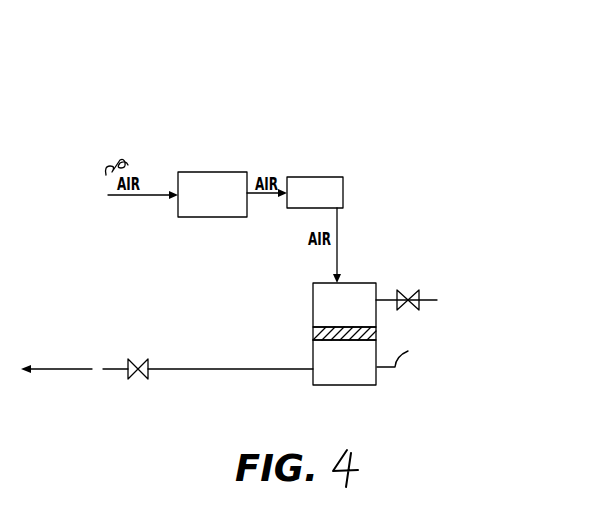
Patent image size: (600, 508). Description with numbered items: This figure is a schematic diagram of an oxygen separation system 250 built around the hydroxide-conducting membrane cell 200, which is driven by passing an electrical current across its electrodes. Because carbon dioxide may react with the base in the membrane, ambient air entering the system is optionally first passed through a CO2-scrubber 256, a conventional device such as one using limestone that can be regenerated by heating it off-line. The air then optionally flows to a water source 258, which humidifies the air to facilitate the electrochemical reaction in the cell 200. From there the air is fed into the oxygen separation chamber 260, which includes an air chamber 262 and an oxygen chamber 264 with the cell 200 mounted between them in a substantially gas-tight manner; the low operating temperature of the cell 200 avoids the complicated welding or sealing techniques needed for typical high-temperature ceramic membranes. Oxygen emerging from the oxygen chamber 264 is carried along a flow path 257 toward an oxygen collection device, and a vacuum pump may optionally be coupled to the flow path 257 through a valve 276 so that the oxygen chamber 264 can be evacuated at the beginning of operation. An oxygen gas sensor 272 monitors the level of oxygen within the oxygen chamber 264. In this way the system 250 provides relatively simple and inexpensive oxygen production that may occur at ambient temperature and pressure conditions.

The system 250 is at (355, 88).
The CO2-scrubber 256 is at (233, 172).
The water source 258 is at (333, 176).
The oxygen separation chamber 260 is at (419, 270).
The air chamber 262 is at (363, 316).
The cell 200 is at (388, 329).
The oxygen chamber 264 is at (363, 371).
The oxygen gas sensor 272 is at (412, 352).
The flow path 257 is at (182, 369).
The valve 276 is at (133, 380).